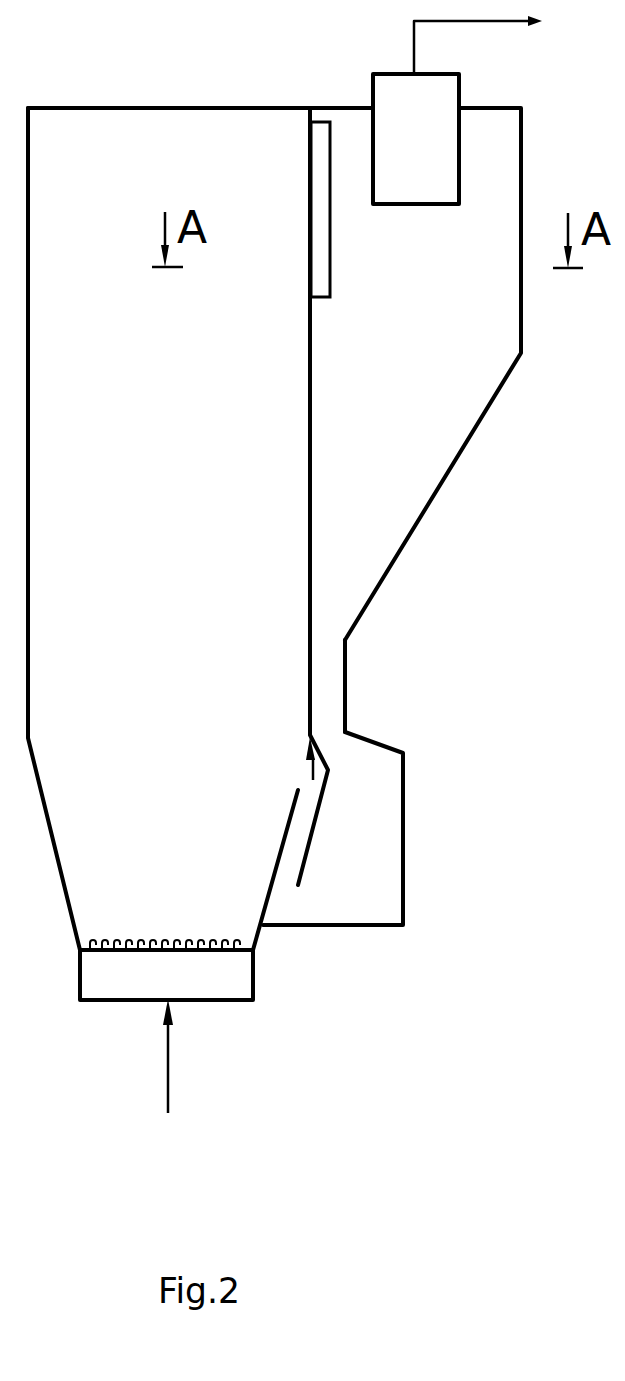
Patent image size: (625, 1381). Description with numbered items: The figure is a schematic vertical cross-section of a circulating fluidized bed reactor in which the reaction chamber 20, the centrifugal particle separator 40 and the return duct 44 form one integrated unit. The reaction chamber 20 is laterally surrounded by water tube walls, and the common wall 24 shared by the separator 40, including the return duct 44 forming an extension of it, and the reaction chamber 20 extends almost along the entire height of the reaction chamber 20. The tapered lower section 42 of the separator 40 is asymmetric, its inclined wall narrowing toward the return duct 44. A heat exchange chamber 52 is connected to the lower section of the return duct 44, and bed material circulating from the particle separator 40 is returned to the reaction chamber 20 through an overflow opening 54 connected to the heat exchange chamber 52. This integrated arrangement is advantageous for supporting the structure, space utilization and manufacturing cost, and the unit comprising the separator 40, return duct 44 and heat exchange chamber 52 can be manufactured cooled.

The reaction chamber 20 is at (205, 407).
The common wall 24 is at (310, 566).
The centrifugal particle separator 40 is at (440, 333).
The tapered lower section 42 is at (440, 466).
The return duct 44 is at (335, 682).
The heat exchange chamber 52 is at (385, 835).
The overflow opening 54 is at (313, 778).